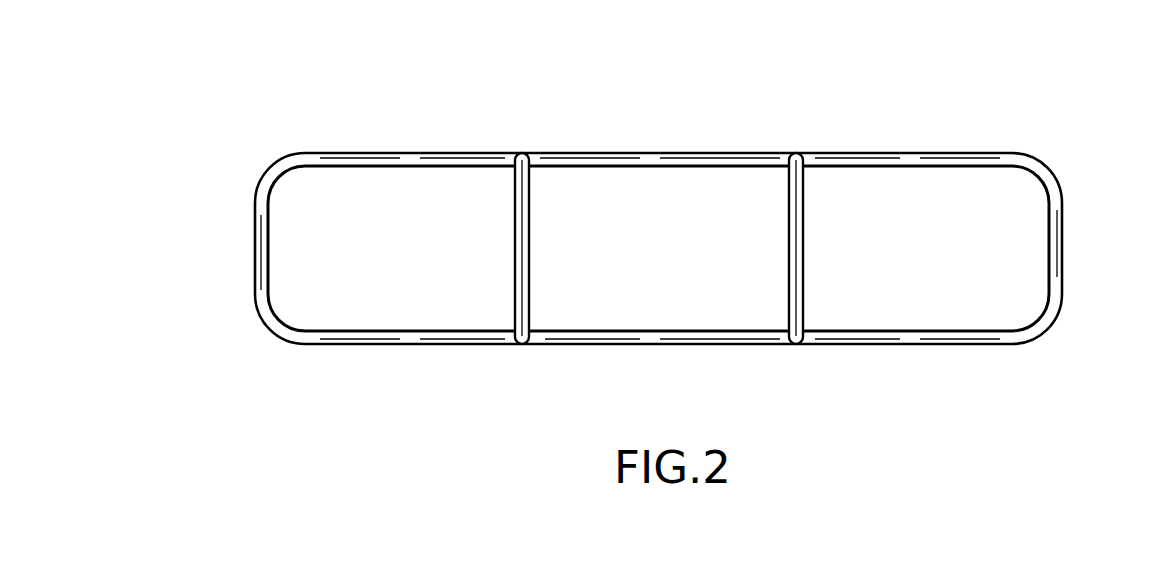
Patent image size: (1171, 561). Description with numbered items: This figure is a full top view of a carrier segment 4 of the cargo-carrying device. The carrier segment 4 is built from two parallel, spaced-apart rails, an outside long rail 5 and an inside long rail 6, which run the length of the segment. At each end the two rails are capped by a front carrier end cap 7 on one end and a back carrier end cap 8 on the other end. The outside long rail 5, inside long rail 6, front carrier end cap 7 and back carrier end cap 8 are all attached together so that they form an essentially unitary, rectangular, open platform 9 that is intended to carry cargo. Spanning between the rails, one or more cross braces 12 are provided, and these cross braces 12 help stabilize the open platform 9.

The carrier segment 4 is at (1078, 127).
The outside long rail 5 is at (632, 155).
The inside long rail 6 is at (719, 344).
The front carrier end cap 7 is at (255, 262).
The back carrier end cap 8 is at (1062, 260).
The open platform 9 is at (962, 364).
The cross brace 12 is at (533, 297).